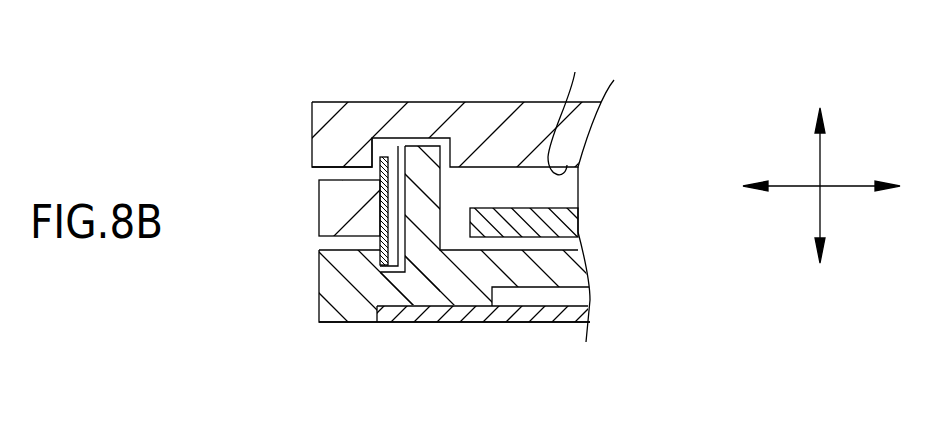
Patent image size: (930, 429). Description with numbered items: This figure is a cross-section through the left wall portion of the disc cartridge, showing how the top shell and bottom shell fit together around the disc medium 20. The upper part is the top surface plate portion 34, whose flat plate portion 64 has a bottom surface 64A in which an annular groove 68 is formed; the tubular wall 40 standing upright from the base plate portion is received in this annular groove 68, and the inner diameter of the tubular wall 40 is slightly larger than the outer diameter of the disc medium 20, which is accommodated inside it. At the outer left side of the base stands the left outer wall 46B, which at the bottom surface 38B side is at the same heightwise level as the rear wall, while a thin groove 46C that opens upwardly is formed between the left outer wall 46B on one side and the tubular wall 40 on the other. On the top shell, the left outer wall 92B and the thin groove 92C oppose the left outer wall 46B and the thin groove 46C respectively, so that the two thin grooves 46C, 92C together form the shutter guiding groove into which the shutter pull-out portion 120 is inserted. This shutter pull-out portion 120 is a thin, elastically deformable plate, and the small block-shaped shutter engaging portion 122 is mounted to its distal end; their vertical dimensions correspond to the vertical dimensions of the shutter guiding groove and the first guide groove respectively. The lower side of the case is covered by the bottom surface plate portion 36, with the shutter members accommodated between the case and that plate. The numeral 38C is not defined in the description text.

The disc medium 20 is at (578, 217).
The top surface plate portion 34 is at (485, 98).
The bottom surface plate portion 36 is at (547, 320).
The bottom surface 38B is at (475, 322).
The stator recess 38C is at (578, 287).
The tubular wall 40 is at (431, 192).
The left outer wall 46B is at (343, 313).
The thin groove 46C is at (365, 263).
The flat plate portion 64 is at (395, 102).
The bottom surface 64A is at (579, 107).
The annular groove 68 is at (386, 138).
The left outer wall 92B is at (325, 140).
The thin groove 92C is at (382, 150).
The shutter pull-out portion 120 is at (382, 248).
The shutter engaging portion 122 is at (330, 212).